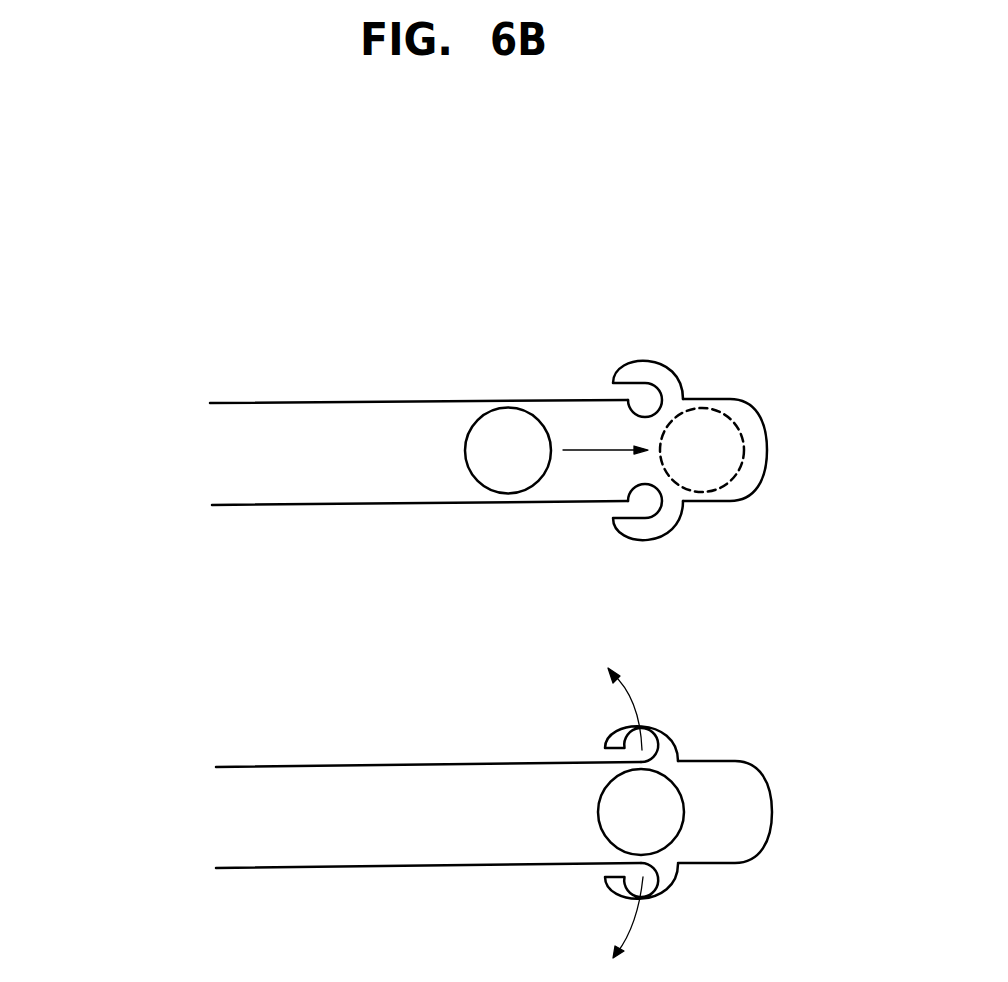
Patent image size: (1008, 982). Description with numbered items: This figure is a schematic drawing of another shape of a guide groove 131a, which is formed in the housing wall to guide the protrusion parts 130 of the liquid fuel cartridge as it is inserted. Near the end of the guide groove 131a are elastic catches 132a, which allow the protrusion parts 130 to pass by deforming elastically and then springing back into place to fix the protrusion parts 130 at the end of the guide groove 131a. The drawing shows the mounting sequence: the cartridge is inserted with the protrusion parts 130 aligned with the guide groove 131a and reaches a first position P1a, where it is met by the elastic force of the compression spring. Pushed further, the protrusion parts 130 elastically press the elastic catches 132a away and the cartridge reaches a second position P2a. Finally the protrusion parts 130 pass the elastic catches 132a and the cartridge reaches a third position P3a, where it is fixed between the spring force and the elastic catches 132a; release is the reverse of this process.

The protrusion part 130 is at (520, 442).
The guide groove 131a is at (240, 450).
The elastic catches 132a is at (667, 380).
The first position P1a is at (482, 418).
The second position P2a is at (603, 790).
The third position P3a is at (738, 472).